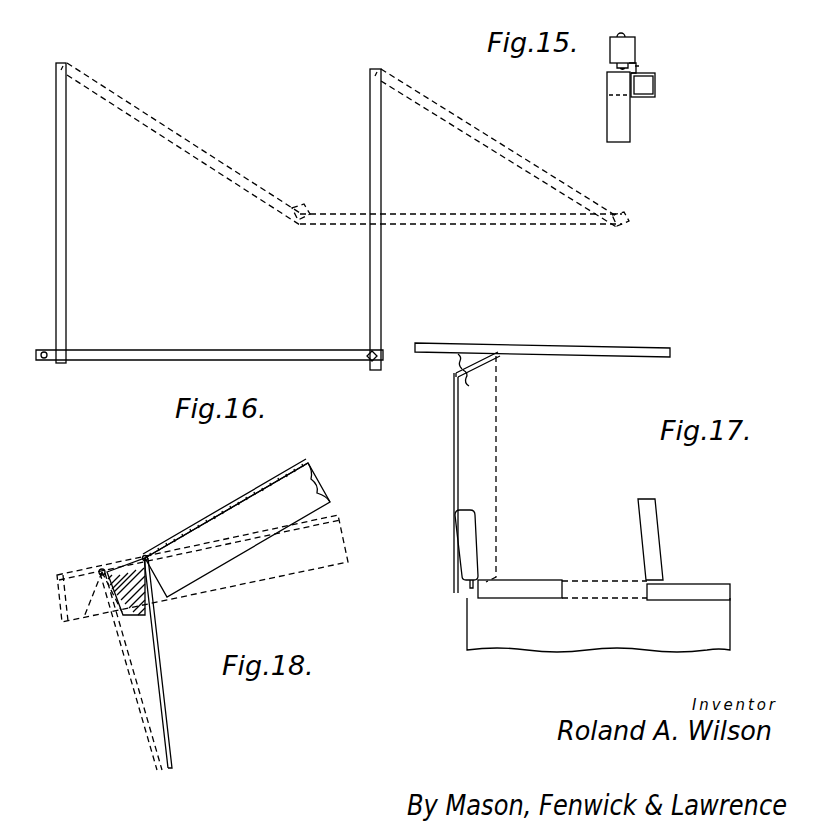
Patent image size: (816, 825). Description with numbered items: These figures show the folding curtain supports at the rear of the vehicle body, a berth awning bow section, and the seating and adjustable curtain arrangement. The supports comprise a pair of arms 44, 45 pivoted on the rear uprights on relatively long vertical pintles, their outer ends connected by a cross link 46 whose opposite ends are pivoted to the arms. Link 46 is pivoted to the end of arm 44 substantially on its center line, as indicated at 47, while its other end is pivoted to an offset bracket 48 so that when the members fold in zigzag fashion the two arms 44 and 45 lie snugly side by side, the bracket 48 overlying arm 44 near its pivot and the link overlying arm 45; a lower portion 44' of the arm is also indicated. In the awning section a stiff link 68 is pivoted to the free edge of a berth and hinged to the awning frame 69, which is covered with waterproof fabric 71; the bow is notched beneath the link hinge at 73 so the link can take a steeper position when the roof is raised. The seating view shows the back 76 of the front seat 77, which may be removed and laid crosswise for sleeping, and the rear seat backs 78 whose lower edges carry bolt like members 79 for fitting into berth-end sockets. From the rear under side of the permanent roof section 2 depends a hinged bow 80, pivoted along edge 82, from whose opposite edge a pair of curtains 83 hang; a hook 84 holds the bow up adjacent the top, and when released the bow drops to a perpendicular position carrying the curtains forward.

In FIG. 17, the permanent roof section 2 is at (500, 352).
In FIG. 15, the arm 44 is at (591, 107).
In FIG. 16, the arm 44 is at (499, 219).
In FIG. 15, the post lower section 44' is at (653, 128).
In FIG. 15, the arm 45 is at (645, 85).
In FIG. 16, the arm 45 is at (60, 255).
In FIG. 15, the cross link 46 is at (626, 50).
In FIG. 16, the cross link 46 is at (190, 356).
In FIG. 16, the pivot 47 is at (378, 352).
In FIG. 15, the offset bracket 48 is at (637, 68).
In FIG. 18, the stiff link 68 is at (172, 733).
In FIG. 18, the awning frame 69 is at (240, 536).
In FIG. 18, the waterproof fabric 71 is at (218, 512).
In FIG. 18, the notch 73 is at (160, 594).
In FIG. 17, the back of front seat 76 is at (640, 533).
In FIG. 17, the front seat 77 is at (690, 582).
In FIG. 17, the rear seat back 78 is at (470, 538).
In FIG. 17, the bolt like member 79 is at (470, 586).
In FIG. 17, the hinged bow 80 is at (476, 388).
In FIG. 17, the pivoted edge 82 is at (503, 356).
In FIG. 17, the curtains 83 is at (453, 442).
In FIG. 17, the hook 84 is at (462, 360).